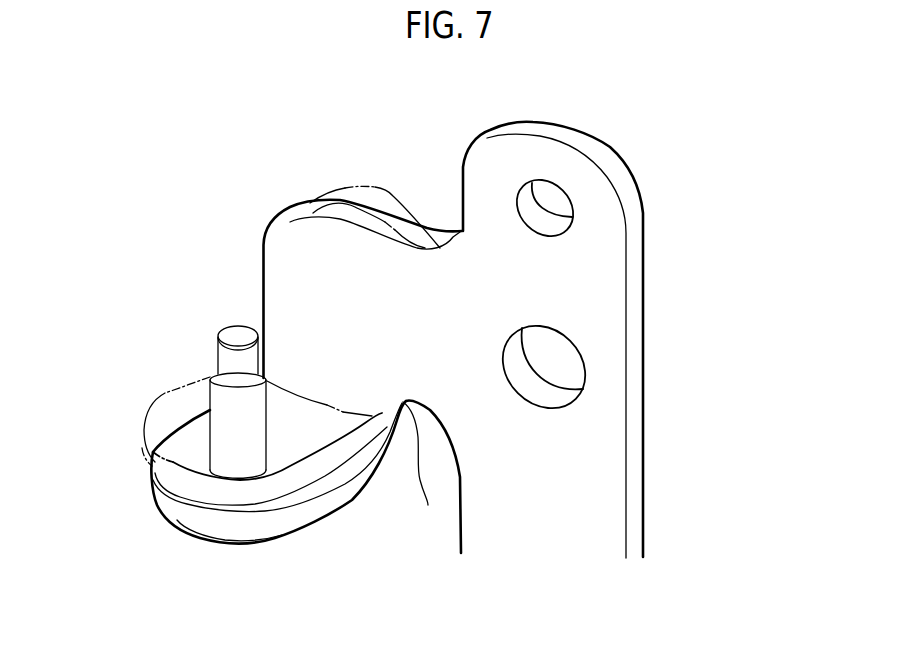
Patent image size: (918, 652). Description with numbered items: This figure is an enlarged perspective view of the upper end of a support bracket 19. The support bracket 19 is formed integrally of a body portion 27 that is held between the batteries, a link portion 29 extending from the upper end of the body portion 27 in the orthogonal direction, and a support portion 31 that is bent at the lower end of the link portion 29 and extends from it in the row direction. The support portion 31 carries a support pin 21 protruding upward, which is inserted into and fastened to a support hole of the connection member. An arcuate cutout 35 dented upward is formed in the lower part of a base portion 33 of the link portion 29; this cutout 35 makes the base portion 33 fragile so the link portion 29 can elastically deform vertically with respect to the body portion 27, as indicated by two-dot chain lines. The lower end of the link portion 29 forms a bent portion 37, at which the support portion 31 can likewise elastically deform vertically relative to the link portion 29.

The support bracket 19 is at (640, 156).
The support pin 21 is at (228, 362).
The body portion 27 is at (669, 492).
The link portion 29 is at (307, 274).
The support portion 31 is at (293, 493).
The base portion 33 is at (430, 287).
The arcuate cutout 35 is at (421, 548).
The bent portion 37 is at (307, 390).